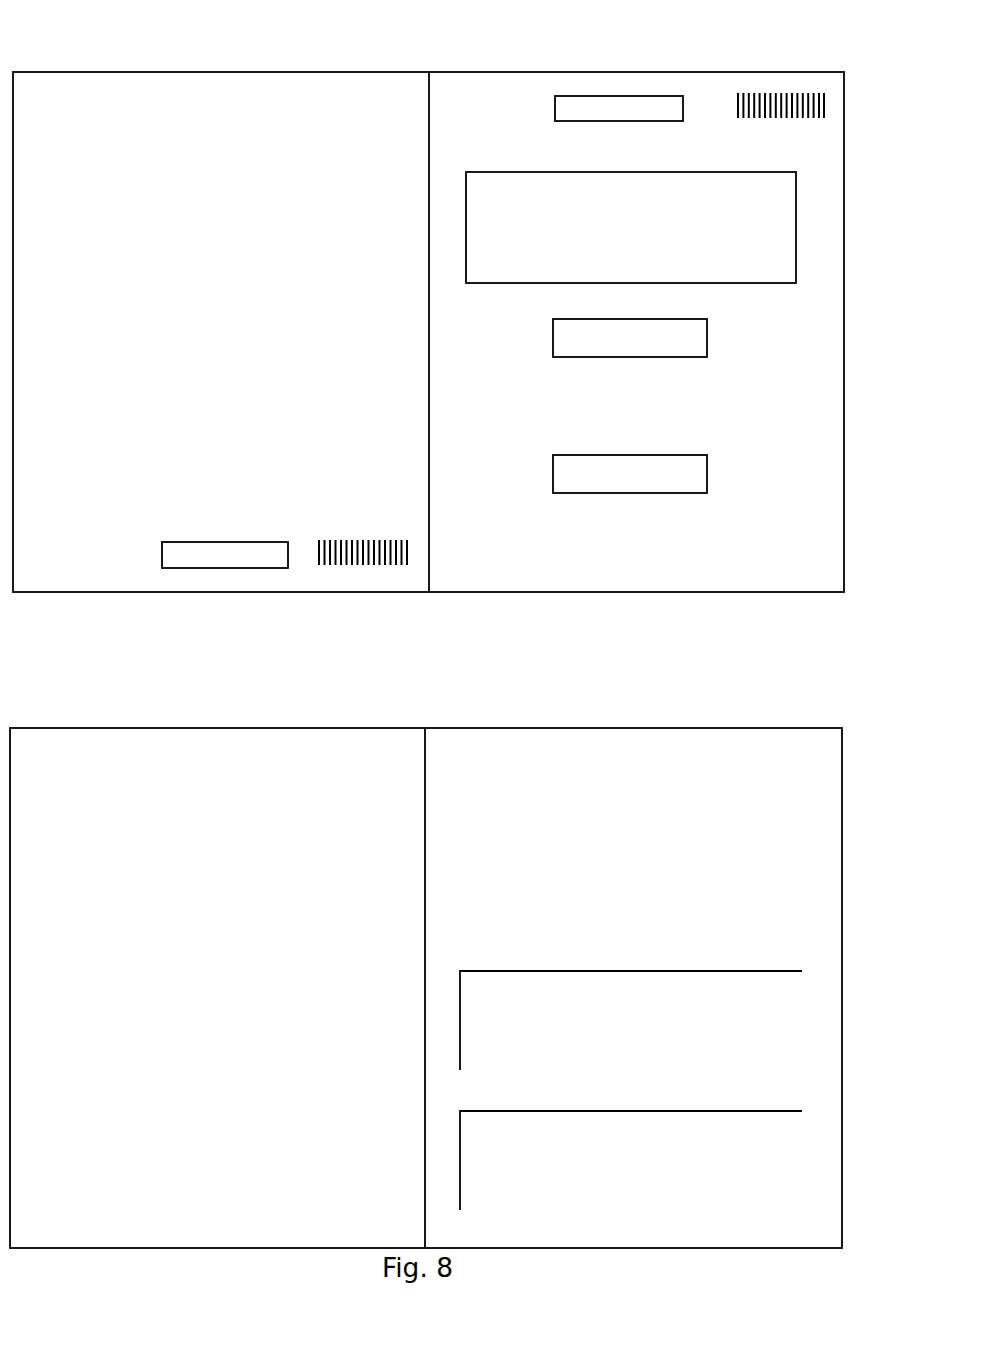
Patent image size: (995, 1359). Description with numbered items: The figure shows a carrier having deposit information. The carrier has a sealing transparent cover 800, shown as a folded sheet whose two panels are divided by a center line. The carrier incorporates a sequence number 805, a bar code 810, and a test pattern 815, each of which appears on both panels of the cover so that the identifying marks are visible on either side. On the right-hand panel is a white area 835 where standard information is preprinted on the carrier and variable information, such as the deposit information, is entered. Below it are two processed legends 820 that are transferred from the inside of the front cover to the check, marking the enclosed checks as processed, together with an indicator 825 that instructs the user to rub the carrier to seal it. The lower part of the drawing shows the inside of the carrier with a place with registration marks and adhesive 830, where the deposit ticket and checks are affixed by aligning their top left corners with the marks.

The sealing transparent cover 800 is at (380, 72).
The sequence number 805 is at (493, 85).
The bar code 810 is at (797, 83).
The test pattern 815 is at (607, 83).
The processed legend 820 is at (553, 368).
The indicator to rub carrier to seal 825 is at (756, 592).
The place with registration marks and adhesive 830 is at (450, 1162).
The white area 835 is at (745, 295).